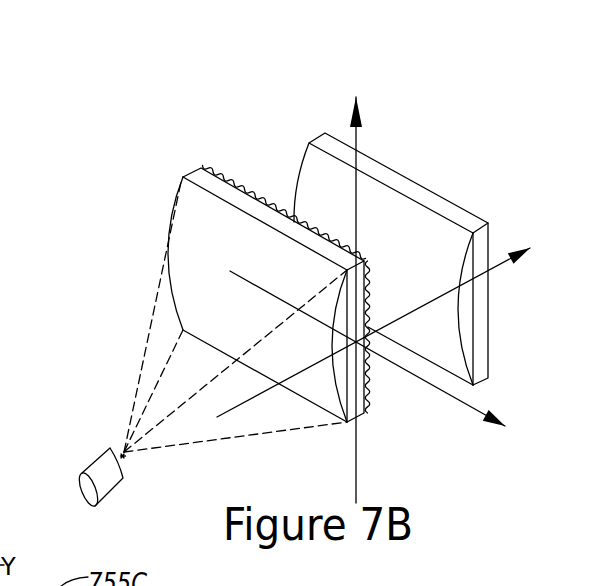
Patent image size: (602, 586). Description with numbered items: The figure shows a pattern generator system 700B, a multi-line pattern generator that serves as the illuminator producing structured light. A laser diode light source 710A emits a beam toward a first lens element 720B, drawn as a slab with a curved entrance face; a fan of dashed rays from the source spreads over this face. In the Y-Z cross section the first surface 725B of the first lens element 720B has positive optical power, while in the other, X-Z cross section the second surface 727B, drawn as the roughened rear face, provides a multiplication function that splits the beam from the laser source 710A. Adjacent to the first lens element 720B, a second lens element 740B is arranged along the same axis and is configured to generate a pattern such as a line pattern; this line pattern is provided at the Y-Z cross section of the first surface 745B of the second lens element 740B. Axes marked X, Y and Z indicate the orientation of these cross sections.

The pattern generator system 700B is at (217, 75).
The light source 710A is at (105, 450).
The first lens element 720B is at (213, 182).
The first surface of the first lens element 725B is at (188, 220).
The second surface of the first lens element 727B is at (371, 366).
The second lens element 740B is at (332, 147).
The first surface of the second lens element 745B is at (485, 247).